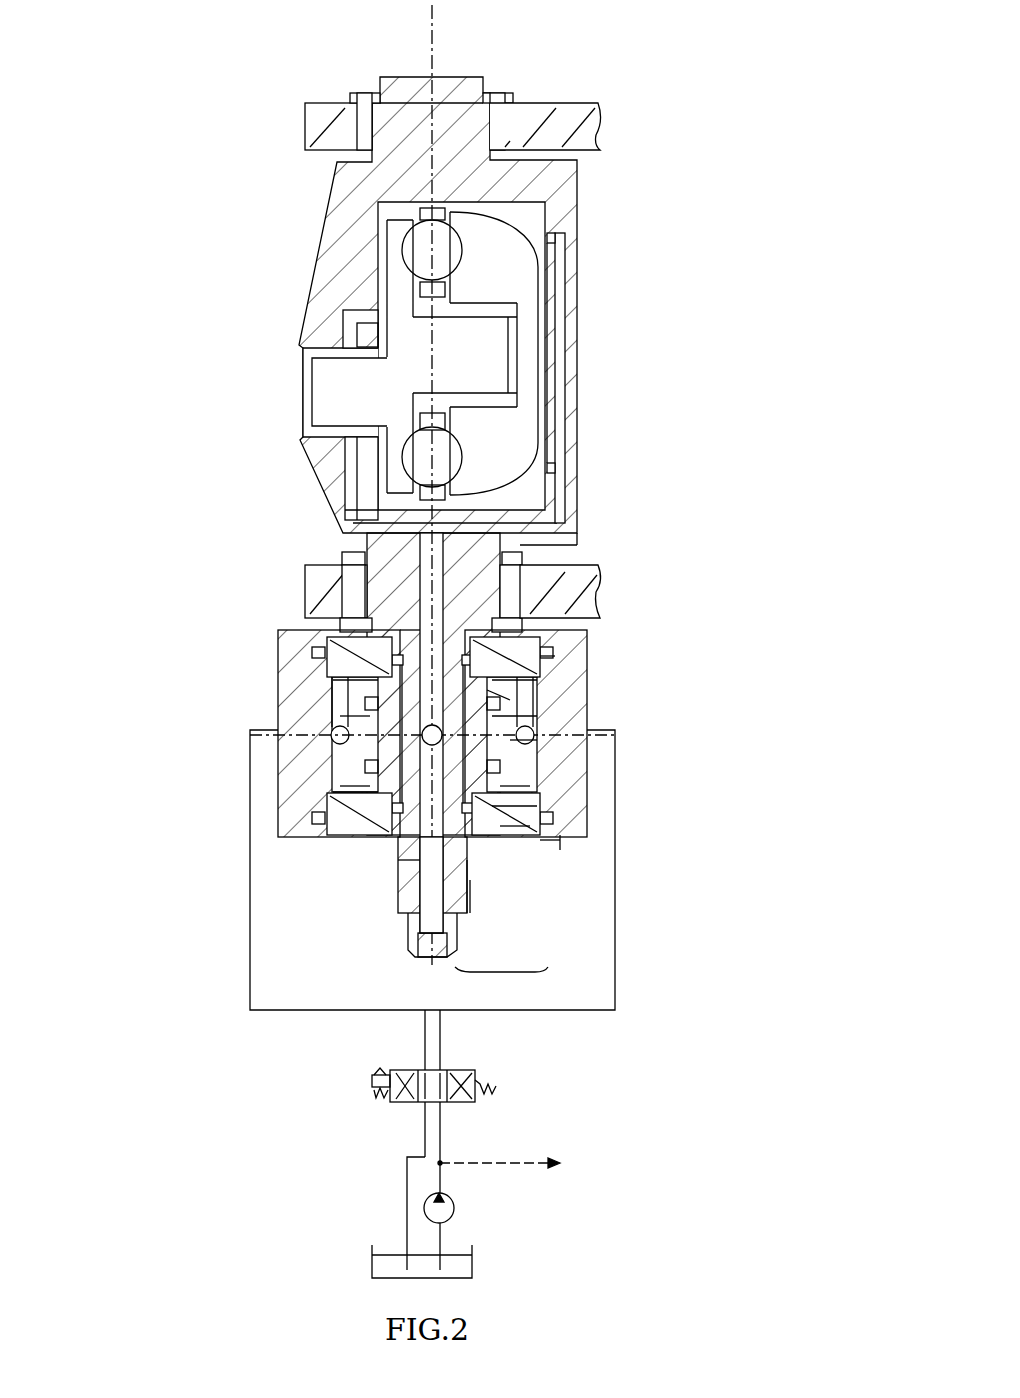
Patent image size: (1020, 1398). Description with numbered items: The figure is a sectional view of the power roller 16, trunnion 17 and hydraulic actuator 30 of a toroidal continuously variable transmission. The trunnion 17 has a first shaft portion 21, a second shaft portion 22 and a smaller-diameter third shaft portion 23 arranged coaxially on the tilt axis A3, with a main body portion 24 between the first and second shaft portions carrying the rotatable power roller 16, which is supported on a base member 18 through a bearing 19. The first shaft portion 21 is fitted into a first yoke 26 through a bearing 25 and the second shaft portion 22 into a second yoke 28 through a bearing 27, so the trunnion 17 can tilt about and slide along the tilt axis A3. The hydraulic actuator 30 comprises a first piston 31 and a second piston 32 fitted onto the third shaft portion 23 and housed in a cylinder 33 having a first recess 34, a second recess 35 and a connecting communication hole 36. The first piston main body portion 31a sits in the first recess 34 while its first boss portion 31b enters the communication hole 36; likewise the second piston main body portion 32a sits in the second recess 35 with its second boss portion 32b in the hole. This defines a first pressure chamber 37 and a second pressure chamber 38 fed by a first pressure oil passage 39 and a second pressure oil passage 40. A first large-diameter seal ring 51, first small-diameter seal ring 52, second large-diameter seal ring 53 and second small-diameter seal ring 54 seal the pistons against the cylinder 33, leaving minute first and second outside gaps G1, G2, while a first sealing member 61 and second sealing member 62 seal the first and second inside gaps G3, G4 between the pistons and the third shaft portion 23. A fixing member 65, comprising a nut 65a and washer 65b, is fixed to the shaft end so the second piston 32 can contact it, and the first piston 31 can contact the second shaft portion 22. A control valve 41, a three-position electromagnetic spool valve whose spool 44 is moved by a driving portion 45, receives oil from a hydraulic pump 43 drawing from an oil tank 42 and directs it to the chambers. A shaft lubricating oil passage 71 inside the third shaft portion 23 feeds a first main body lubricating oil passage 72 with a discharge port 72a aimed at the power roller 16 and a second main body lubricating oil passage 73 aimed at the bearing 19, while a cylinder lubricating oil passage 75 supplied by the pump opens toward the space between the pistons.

The power roller 16 is at (525, 285).
The trunnion 17 is at (312, 248).
The base member 18 is at (330, 390).
The bearing 19 is at (328, 340).
The first shaft portion 21 is at (405, 118).
The second shaft portion 22 is at (360, 555).
The third shaft portion 23 is at (410, 905).
The main body portion 24 is at (318, 460).
The bearing 25 is at (510, 100).
The first yoke 26 is at (578, 102).
The bearing 27 is at (540, 556).
The second yoke 28 is at (590, 580).
The hydraulic actuator 30 is at (147, 572).
The first piston 31 is at (535, 650).
The first piston main body portion 31a is at (500, 680).
The first boss portion 31b is at (490, 716).
The second piston 32 is at (515, 880).
The second piston main body portion 32a is at (555, 840).
The second boss portion 32b is at (520, 806).
The cylinder 33 is at (530, 632).
The first recess 34 is at (492, 692).
The second recess 35 is at (530, 826).
The communication hole 36 is at (380, 742).
The first pressure chamber 37 is at (338, 692).
The second pressure chamber 38 is at (345, 786).
The first pressure oil passage 39 is at (340, 716).
The second pressure oil passage 40 is at (500, 760).
The control valve 41 is at (480, 1073).
The oil tank 42 is at (472, 1262).
The hydraulic pump 43 is at (452, 1200).
The spool 44 is at (380, 1100).
The driving portion 45 is at (375, 1082).
The first large-diameter seal ring 51 is at (550, 656).
The first small-diameter seal ring 52 is at (520, 740).
The second large-diameter seal ring 53 is at (560, 850).
The second small-diameter seal ring 54 is at (512, 786).
The first sealing member 61 is at (340, 655).
The second sealing member 62 is at (345, 833).
The fixing member 65 is at (501, 986).
The nut 65a is at (485, 900).
The washer 65b is at (510, 880).
The shaft lubricating oil passage 71 is at (380, 585).
The first main body lubricating oil passage 72 is at (563, 350).
The discharge port 72a is at (555, 240).
The second main body lubricating oil passage 73 is at (345, 505).
The cylinder lubricating oil passage 75 is at (662, 1163).
The tilt axis A3 is at (448, 46).
The first outside gap G1 is at (333, 680).
The second outside gap G2 is at (330, 806).
The first inside gap G3 is at (400, 622).
The second inside gap G4 is at (397, 870).